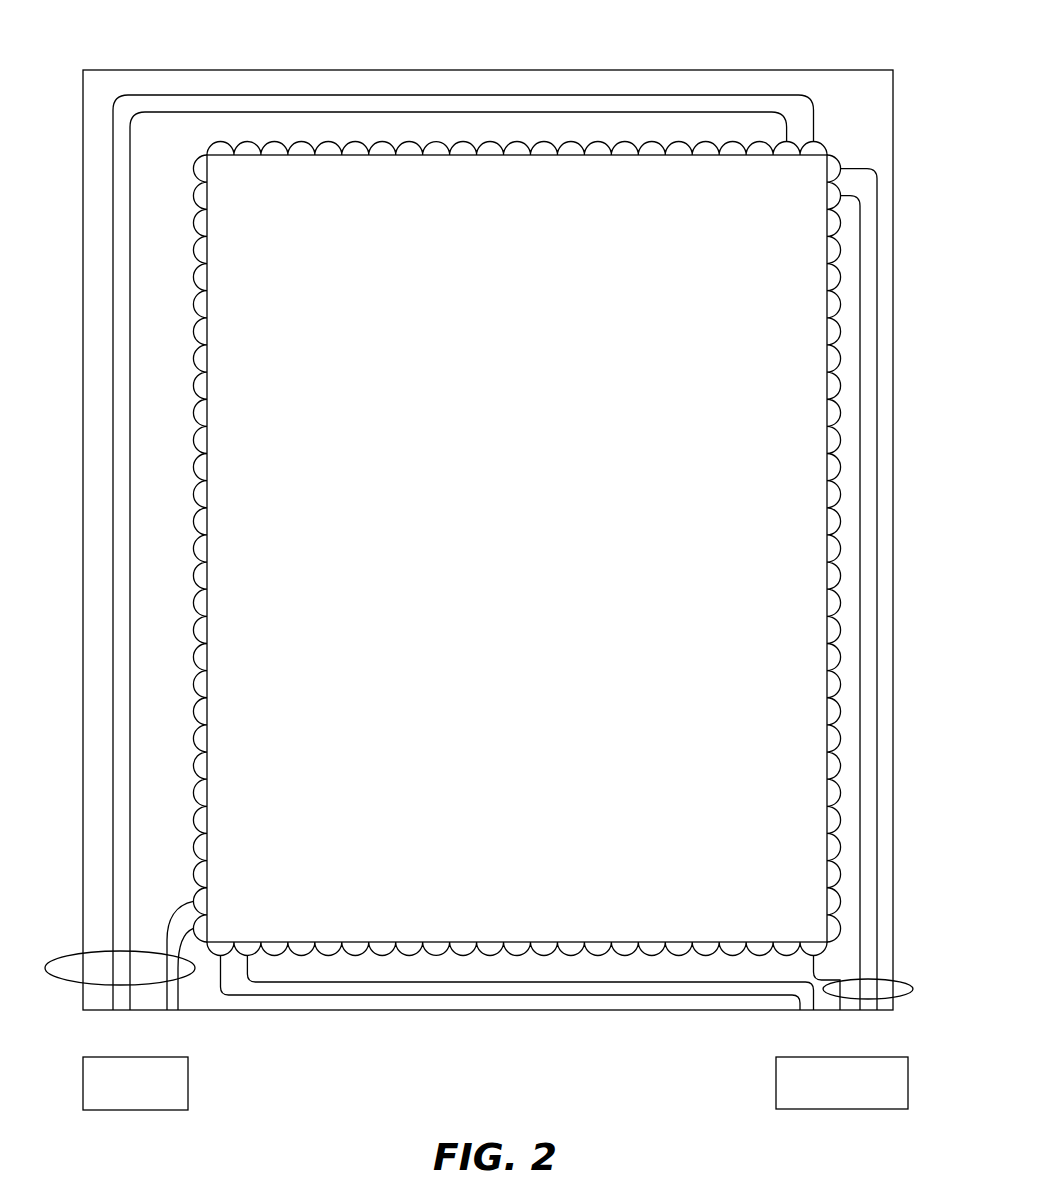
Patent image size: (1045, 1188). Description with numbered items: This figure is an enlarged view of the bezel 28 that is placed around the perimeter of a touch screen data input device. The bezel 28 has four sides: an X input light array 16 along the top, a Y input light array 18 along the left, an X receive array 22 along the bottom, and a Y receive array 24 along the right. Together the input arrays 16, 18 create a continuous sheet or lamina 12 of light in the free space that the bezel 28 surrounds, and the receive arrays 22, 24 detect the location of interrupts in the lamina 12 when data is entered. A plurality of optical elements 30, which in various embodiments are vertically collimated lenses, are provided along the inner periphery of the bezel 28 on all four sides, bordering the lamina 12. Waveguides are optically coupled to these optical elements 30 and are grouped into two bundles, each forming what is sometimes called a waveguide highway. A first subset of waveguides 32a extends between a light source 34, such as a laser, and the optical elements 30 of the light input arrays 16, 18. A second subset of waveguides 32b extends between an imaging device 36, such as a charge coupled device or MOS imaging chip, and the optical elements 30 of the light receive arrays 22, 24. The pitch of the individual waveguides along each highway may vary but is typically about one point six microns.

The lamina 12 is at (530, 496).
The X input light source 16 is at (463, 89).
The Y input light source 18 is at (123, 561).
The X receive array 22 is at (610, 1057).
The Y receive array 24 is at (868, 589).
The bezel 28 is at (778, 48).
The optical elements 30 is at (474, 148).
The first subset of waveguides 32a is at (70, 982).
The second subset of waveguides 32b is at (903, 998).
The light source 34 is at (135, 1083).
The imaging device 36 is at (842, 1083).